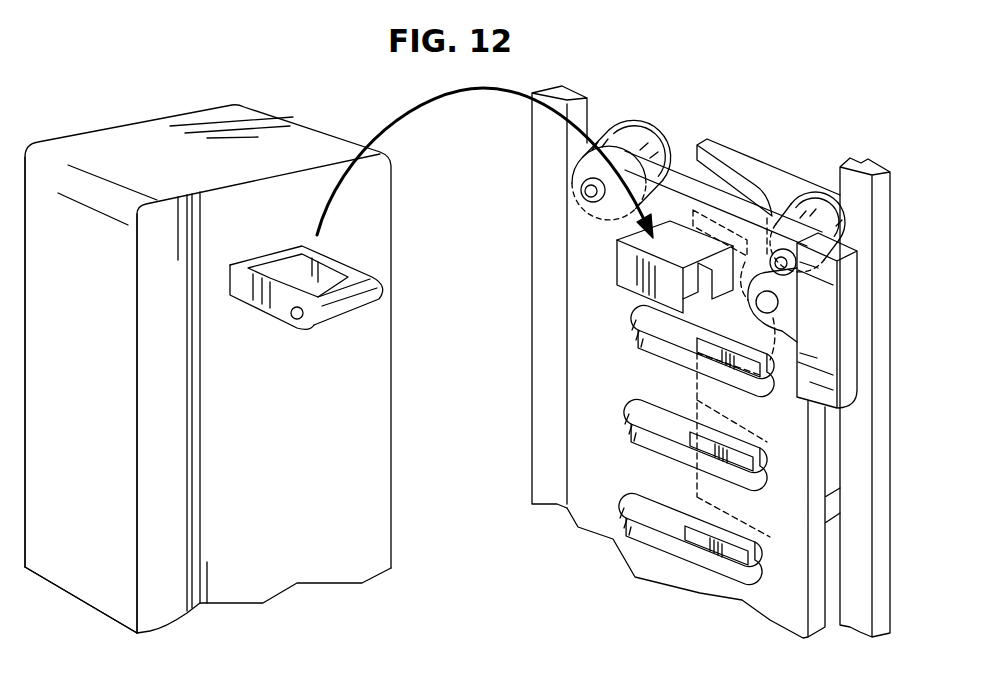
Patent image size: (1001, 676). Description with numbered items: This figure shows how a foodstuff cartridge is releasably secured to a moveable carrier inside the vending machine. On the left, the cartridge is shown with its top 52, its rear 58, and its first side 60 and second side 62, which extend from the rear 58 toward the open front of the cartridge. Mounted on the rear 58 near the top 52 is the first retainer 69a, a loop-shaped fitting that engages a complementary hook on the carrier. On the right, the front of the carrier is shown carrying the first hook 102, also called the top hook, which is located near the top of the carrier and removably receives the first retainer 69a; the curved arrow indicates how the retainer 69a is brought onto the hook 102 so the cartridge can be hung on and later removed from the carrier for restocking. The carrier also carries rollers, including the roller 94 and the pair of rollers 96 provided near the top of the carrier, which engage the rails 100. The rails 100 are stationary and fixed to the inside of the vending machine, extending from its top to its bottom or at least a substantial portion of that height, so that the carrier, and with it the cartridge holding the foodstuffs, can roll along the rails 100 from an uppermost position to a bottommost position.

The top 52 is at (152, 174).
The rear 58 is at (272, 498).
The first side 60 is at (82, 398).
The second side 62 is at (392, 540).
The first retainer 69a is at (335, 308).
The roller 94 is at (661, 106).
The rollers 96 is at (626, 130).
The rails 100 is at (553, 382).
The first hook 102 is at (618, 276).